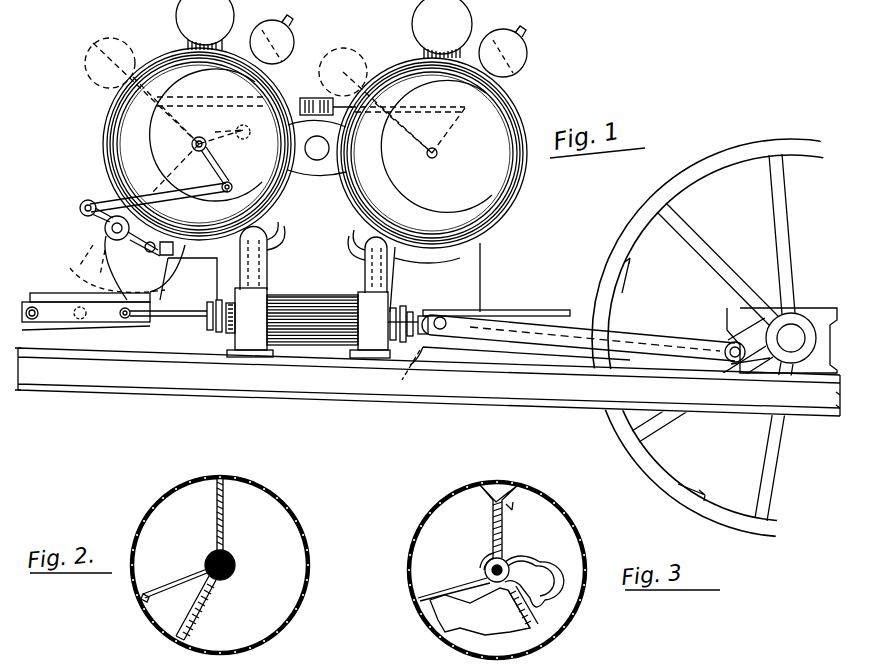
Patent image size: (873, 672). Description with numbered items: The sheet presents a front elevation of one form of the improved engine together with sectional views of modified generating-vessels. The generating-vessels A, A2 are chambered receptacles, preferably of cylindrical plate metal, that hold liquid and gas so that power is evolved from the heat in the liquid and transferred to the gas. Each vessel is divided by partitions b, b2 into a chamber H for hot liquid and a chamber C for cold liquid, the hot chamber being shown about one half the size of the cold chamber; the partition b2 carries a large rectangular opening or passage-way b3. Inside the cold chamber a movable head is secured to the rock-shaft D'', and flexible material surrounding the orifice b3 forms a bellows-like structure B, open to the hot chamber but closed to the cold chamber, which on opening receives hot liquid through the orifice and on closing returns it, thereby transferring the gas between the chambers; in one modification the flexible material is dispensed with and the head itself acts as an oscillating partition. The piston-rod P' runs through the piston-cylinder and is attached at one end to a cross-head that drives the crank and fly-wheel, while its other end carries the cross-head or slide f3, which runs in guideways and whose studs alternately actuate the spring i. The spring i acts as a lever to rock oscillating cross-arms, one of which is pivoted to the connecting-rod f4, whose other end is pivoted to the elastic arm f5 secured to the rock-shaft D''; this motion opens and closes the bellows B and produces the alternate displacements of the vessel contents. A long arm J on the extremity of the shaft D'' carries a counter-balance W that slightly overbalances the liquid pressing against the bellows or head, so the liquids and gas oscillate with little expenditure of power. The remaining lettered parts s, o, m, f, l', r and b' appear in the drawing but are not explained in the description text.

In FIG. 1, the generating-vessel A is at (188, 174).
In FIG. 1, the generating-vessel A2 is at (527, 176).
In FIG. 1, the bellows-like structure B is at (324, 29).
In FIG. 3, the bellows-like structure B is at (484, 610).
In FIG. 1, the long arm J is at (392, 40).
In FIG. 1, the counter-balance W is at (393, 51).
In FIG. 1, the rock-shaft D'' is at (298, 164).
In FIG. 2, the rock-shaft D'' is at (233, 565).
In FIG. 3, the rock-shaft D'' is at (503, 564).
In FIG. 1, the elastic arm f5 is at (224, 169).
In FIG. 1, the connecting-rod f4 is at (154, 194).
In FIG. 1, the cross-head or slide f3 is at (86, 311).
In FIG. 1, the spring i is at (127, 254).
In FIG. 1, the piston-rod P' is at (241, 209).
In FIG. 1, the standard s is at (313, 257).
In FIG. 1, the bearing block o is at (308, 311).
In FIG. 1, the cylinder m is at (312, 313).
In FIG. 1, the rod f is at (408, 369).
In FIG. 1, the connecting rod l' is at (572, 337).
In FIG. 1, the crank pin r is at (736, 349).
In FIG. 2, the partition b is at (226, 514).
In FIG. 2, the spoke b' is at (199, 608).
In FIG. 2, the partition b2 is at (150, 587).
In FIG. 2, the opening or passage-way b3 is at (175, 580).
In FIG. 3, the chamber for hot liquid H is at (468, 543).
In FIG. 3, the chamber for cold liquid C is at (534, 573).